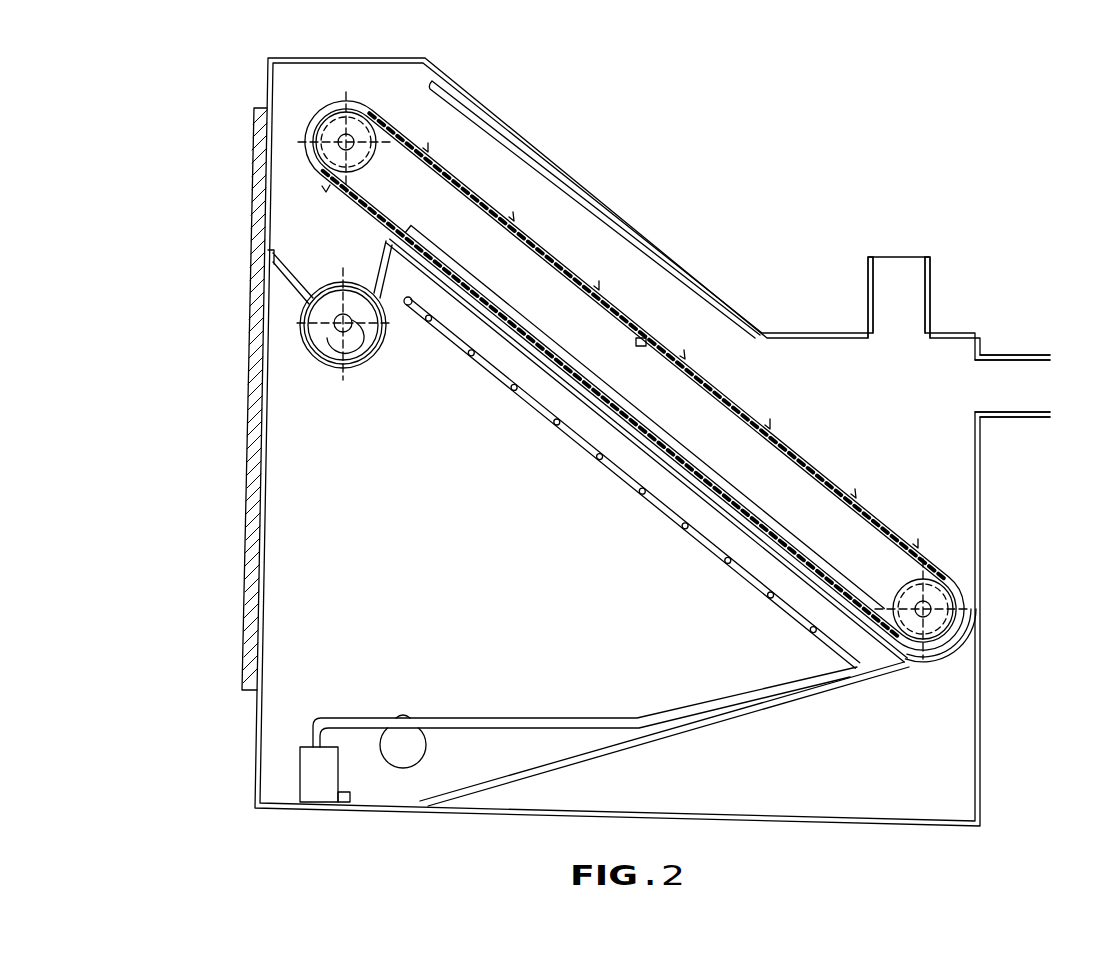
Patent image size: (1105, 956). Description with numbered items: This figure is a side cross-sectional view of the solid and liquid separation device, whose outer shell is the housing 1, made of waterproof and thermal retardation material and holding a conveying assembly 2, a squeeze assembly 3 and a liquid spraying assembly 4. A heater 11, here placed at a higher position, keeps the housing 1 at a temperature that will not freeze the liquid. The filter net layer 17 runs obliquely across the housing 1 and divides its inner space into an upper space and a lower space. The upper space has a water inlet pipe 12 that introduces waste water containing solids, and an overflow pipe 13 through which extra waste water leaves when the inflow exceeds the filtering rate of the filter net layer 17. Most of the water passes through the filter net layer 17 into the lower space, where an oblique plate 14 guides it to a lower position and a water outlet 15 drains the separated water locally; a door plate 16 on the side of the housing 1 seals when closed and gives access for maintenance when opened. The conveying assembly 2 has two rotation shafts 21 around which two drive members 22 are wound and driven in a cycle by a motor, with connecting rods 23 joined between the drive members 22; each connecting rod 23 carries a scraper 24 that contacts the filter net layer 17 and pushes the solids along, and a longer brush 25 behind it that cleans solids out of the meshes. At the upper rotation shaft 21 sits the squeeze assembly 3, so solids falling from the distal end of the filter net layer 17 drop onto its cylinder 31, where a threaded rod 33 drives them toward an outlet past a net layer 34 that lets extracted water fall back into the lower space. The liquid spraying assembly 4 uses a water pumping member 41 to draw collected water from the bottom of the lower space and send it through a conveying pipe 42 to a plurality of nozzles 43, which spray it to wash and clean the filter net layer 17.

The housing 1 is at (680, 262).
The conveying assembly 2 is at (620, 334).
The squeeze assembly 3 is at (358, 332).
The liquid spraying assembly 4 is at (566, 575).
The heater 11 is at (567, 187).
The water inlet pipe 12 is at (888, 275).
The overflow pipe 13 is at (1045, 395).
The oblique plate 14 is at (607, 752).
The water outlet 15 is at (403, 753).
The door plate 16 is at (248, 492).
The filter net layer 17 is at (660, 467).
The rotation shaft 21 is at (337, 136).
The drive member 22 is at (812, 455).
The connecting rod 23 is at (457, 173).
The scraper 24 is at (500, 163).
The brush 25 is at (460, 173).
The cylinder 31 is at (330, 363).
The threaded rod 33 is at (340, 313).
The net layer 34 is at (370, 343).
The water pumping member 41 is at (312, 790).
The conveying pipe 42 is at (350, 718).
The nozzle 43 is at (508, 377).